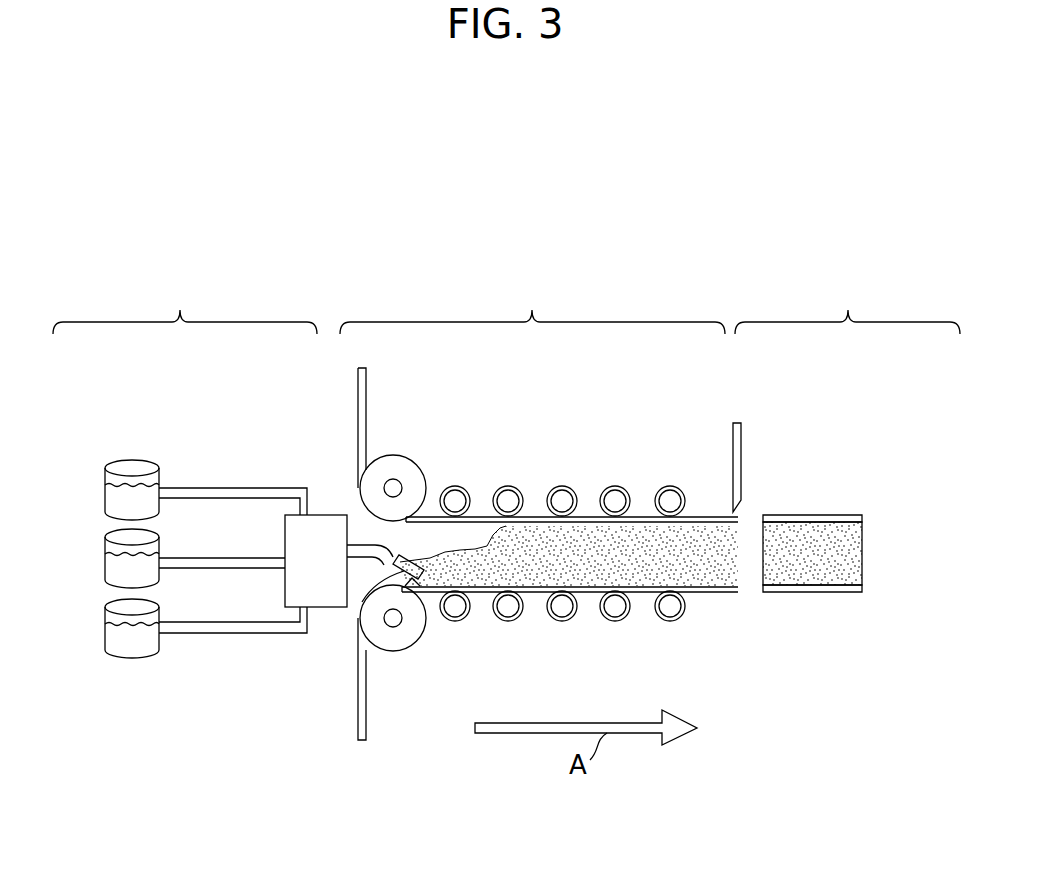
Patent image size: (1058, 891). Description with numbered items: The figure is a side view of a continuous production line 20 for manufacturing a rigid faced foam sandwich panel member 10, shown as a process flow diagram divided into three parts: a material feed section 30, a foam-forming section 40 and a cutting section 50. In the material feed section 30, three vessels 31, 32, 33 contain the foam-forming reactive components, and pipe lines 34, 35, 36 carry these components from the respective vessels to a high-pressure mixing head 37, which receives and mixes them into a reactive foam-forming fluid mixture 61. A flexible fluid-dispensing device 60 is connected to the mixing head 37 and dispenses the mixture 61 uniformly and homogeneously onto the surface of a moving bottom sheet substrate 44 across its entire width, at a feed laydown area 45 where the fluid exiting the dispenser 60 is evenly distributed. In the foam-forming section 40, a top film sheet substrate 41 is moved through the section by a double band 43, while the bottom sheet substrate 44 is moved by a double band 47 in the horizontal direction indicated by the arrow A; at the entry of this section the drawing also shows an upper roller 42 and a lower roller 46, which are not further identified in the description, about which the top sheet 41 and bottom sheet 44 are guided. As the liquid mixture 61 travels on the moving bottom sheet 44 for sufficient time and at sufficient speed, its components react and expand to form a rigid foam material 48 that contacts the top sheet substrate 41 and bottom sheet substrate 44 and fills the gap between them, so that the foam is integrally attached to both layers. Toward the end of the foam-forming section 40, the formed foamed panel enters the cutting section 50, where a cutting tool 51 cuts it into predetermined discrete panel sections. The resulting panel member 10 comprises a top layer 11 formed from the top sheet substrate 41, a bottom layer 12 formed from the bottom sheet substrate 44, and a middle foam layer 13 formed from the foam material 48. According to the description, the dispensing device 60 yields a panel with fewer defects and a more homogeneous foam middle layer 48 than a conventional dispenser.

The panel member 10 is at (850, 536).
The top layer 11 is at (805, 515).
The bottom layer 12 is at (832, 592).
The middle foam layer 13 is at (853, 553).
The continuous production line 20 is at (633, 191).
The material feed section 30 is at (180, 304).
The vessel 31 is at (105, 494).
The vessel 32 is at (105, 562).
The vessel 33 is at (105, 633).
The pipe line 34 is at (210, 487).
The pipe line 35 is at (223, 569).
The pipe line 36 is at (275, 634).
The mixing head 37 is at (323, 520).
The foam-forming section 40 is at (533, 304).
The top film sheet substrate 41 is at (367, 393).
The upper feed roller 42 is at (408, 463).
The double band 43 is at (672, 486).
The bottom sheet substrate 44 is at (367, 713).
The feed laydown area 45 is at (420, 573).
The lower feed roller 46 is at (417, 648).
The double band 47 is at (672, 622).
The foam material 48 is at (697, 565).
The cutting section 50 is at (848, 304).
The cutting tool 51 is at (742, 443).
The flexible fluid-dispensing device 60 is at (354, 518).
The foam-forming reactive mixture 61 is at (397, 566).